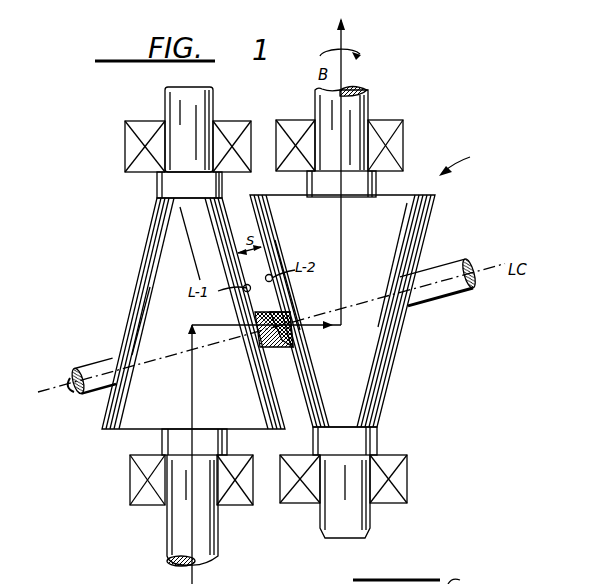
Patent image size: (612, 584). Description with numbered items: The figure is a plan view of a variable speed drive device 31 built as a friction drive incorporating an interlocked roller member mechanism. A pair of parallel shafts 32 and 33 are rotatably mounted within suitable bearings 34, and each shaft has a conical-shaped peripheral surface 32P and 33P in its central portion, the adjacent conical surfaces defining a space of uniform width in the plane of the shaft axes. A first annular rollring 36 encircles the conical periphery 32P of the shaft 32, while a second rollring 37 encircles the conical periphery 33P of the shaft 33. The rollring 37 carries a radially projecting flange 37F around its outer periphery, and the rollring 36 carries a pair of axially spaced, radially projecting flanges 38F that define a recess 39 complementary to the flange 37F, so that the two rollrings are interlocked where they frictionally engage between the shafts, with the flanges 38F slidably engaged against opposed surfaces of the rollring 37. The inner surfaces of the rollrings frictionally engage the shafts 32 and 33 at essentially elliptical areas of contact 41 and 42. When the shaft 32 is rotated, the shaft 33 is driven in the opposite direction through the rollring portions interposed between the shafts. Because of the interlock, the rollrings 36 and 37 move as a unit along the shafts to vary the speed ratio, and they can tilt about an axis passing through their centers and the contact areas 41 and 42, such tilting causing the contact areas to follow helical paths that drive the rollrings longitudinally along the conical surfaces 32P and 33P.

The variable speed drive device 31 is at (465, 160).
The shaft 32 is at (212, 113).
The conical-shaped peripheral surface 32P is at (157, 253).
The shaft 33 is at (360, 113).
The conical-shaped peripheral surface 33P is at (425, 225).
The bearings 34 is at (125, 140).
The rollring 36 is at (107, 370).
The rollring 37 is at (471, 292).
The flange 37F is at (507, 268).
The flanges 38F is at (77, 370).
The recess 39 is at (72, 389).
The area of contact 41 is at (258, 334).
The area of contact 42 is at (287, 323).